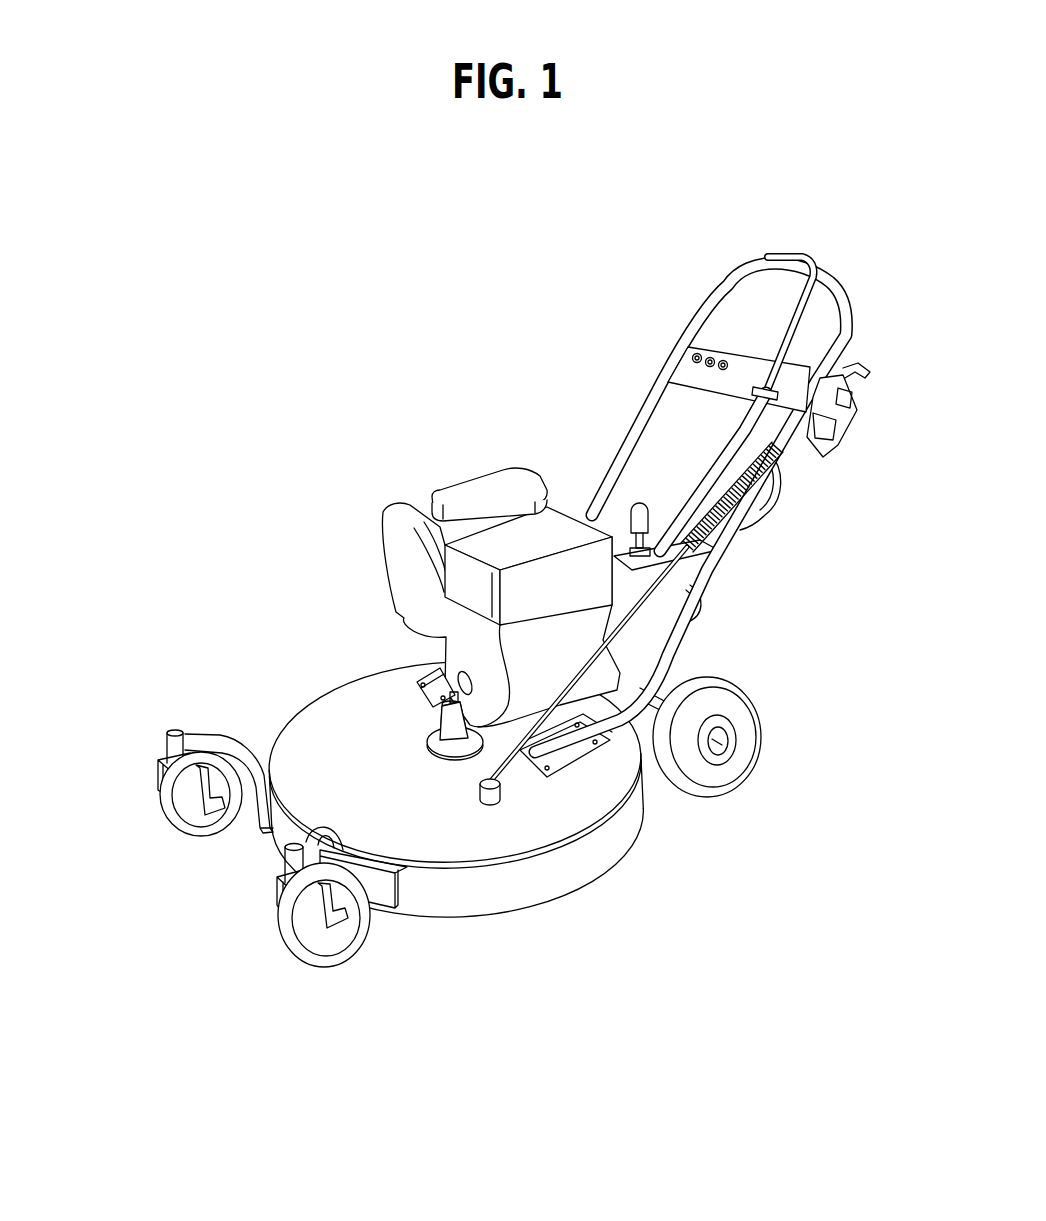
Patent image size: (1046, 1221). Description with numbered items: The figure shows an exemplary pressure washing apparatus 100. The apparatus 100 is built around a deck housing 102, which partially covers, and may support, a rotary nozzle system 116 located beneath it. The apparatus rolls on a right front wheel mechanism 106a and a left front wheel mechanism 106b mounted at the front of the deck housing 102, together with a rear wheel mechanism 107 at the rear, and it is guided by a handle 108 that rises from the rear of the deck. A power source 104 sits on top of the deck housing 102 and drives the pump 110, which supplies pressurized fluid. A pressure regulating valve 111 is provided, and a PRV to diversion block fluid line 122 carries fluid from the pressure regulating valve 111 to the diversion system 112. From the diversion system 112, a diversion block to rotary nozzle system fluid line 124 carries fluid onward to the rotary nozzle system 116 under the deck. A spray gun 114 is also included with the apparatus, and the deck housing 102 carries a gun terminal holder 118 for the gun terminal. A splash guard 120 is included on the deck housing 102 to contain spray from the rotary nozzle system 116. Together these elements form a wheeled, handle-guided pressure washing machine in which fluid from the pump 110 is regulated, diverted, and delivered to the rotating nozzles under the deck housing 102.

The pressure washing apparatus 100 is at (226, 440).
The deck housing 102 is at (363, 679).
The power source 104 is at (443, 486).
The right front wheel mechanism 106a is at (163, 760).
The left front wheel mechanism 106b is at (280, 937).
The rear wheel mechanism 107 is at (758, 705).
The handle 108 is at (712, 295).
The pump 110 is at (658, 596).
The pressure regulating valve 111 is at (640, 513).
The diversion system 112 is at (820, 273).
The spray gun 114 is at (857, 447).
The rotary nozzle system 116 is at (450, 750).
The gun terminal holder 118 is at (502, 800).
The splash guard 120 is at (491, 915).
The PRV to diversion block fluid line 122 is at (777, 483).
The diversion block to rotary nozzle system fluid line 124 is at (720, 480).